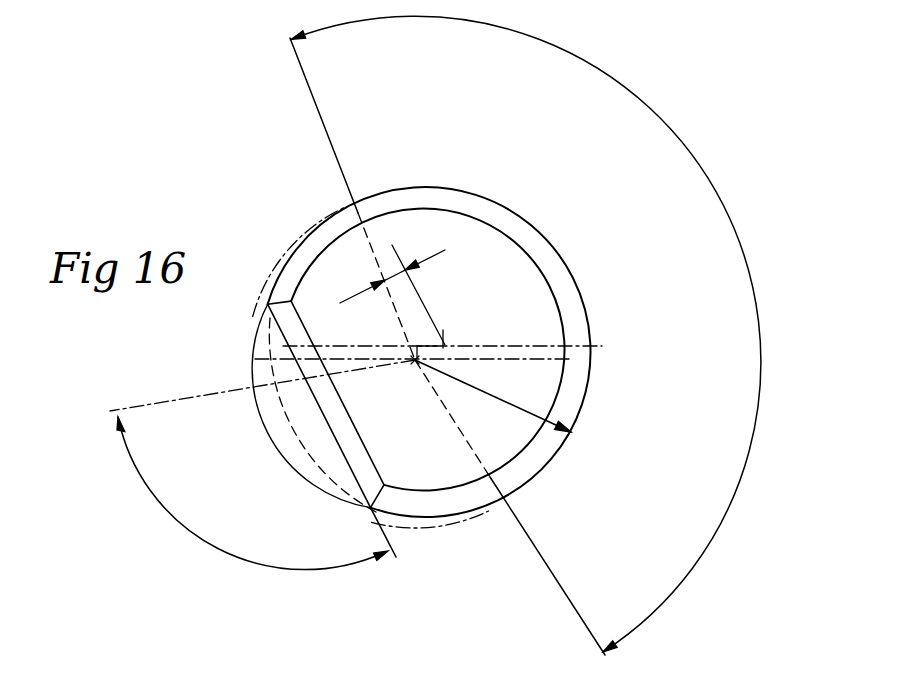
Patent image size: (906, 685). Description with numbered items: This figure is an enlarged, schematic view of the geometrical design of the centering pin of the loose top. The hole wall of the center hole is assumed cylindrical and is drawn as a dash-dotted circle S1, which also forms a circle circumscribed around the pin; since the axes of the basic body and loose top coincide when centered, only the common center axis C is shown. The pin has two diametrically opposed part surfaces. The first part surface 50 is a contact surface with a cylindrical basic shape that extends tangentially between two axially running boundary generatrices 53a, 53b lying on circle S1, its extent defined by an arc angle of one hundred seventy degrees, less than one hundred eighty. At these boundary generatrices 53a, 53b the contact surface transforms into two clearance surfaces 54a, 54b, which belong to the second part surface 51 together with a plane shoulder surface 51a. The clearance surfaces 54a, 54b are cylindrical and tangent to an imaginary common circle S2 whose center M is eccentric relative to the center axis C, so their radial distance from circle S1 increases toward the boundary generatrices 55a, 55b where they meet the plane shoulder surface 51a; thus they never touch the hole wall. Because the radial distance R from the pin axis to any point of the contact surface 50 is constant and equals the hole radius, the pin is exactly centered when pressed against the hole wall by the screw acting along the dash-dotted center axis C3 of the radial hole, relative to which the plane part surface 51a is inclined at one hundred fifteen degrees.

The first part surface 50 is at (592, 388).
The second part surface 51 is at (298, 407).
The plane shoulder surface 51a is at (333, 437).
The boundary generatrix 53a is at (352, 200).
The boundary generatrix 53b is at (496, 505).
The clearance surface 54a is at (303, 238).
The clearance surface 54b is at (430, 517).
The boundary generatrix 55a is at (272, 311).
The boundary generatrix 55b is at (374, 508).
The circumscribed circle S1 is at (257, 335).
The common circle S2 is at (273, 374).
The center axis C is at (414, 364).
The center axis of the radial hole C3 is at (150, 402).
The center of the common circle M is at (446, 328).
The radial distance R is at (493, 396).